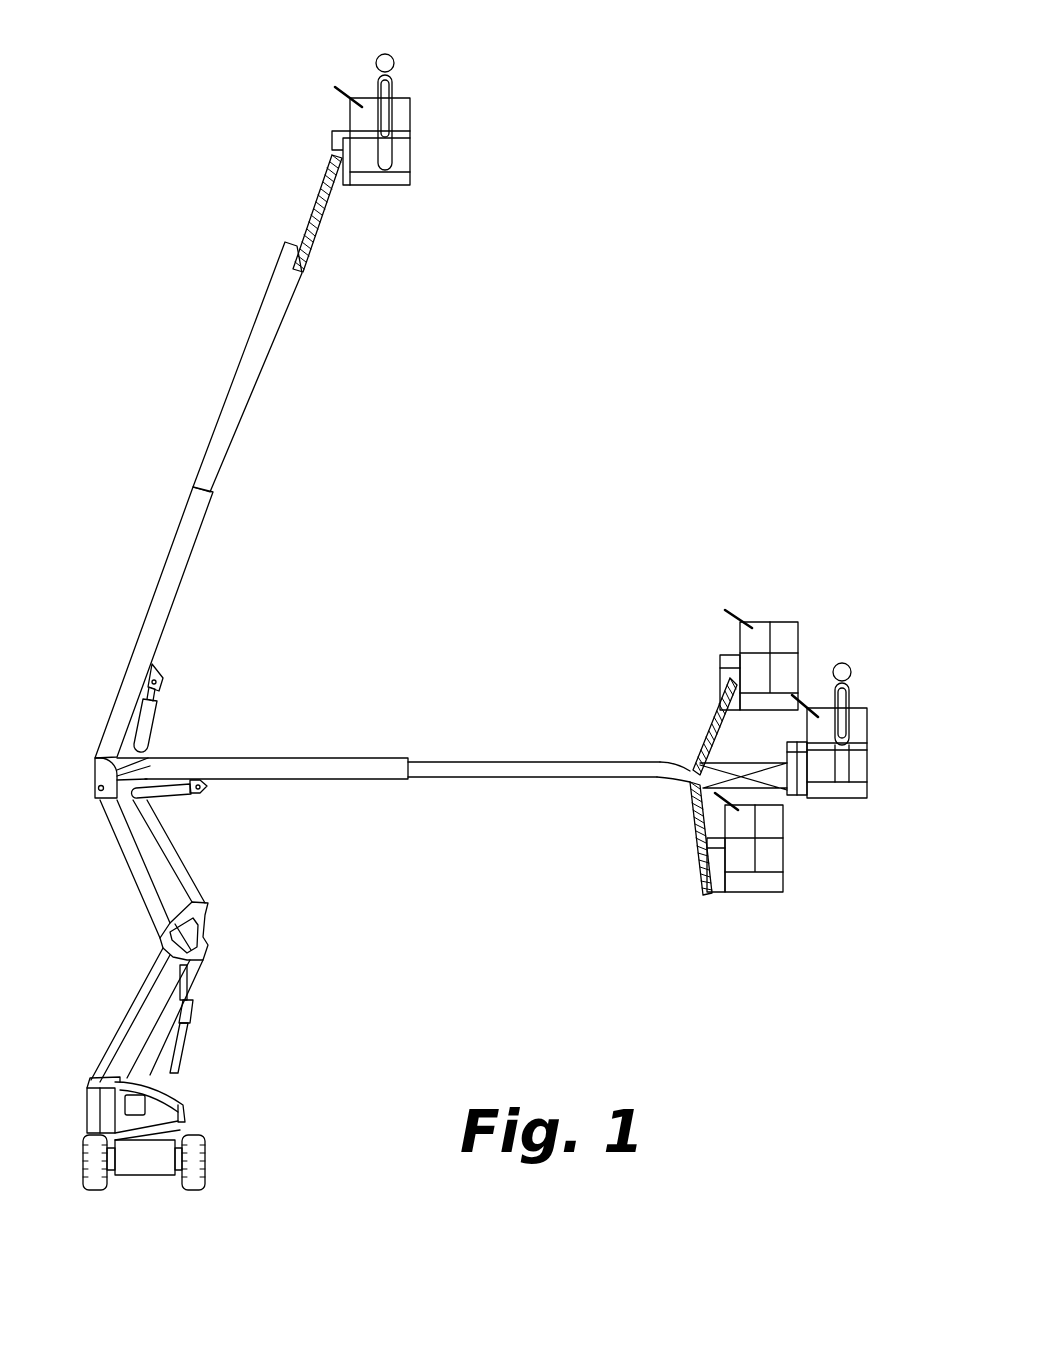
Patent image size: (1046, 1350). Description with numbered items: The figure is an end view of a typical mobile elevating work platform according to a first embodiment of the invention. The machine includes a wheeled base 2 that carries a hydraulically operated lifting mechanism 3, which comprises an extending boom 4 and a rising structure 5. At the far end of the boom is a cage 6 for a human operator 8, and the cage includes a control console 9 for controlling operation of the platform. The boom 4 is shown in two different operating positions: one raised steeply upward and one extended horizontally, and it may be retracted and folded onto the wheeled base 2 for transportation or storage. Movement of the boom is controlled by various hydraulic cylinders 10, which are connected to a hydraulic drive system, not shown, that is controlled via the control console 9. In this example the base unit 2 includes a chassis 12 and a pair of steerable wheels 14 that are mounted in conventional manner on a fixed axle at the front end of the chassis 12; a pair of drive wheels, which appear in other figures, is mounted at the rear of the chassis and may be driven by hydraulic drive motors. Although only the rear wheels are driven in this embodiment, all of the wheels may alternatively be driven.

The wheeled base 2 is at (153, 1152).
The hydraulically operated lifting mechanism 3 is at (388, 632).
The extending boom 4 is at (240, 393).
The rising structure 5 is at (200, 957).
The cage 6 is at (400, 175).
The human operator 8 is at (375, 85).
The control console 9 is at (343, 93).
The hydraulic cylinders 10 is at (150, 710).
The chassis 12 is at (135, 1168).
The steerable wheels 14 is at (195, 1153).